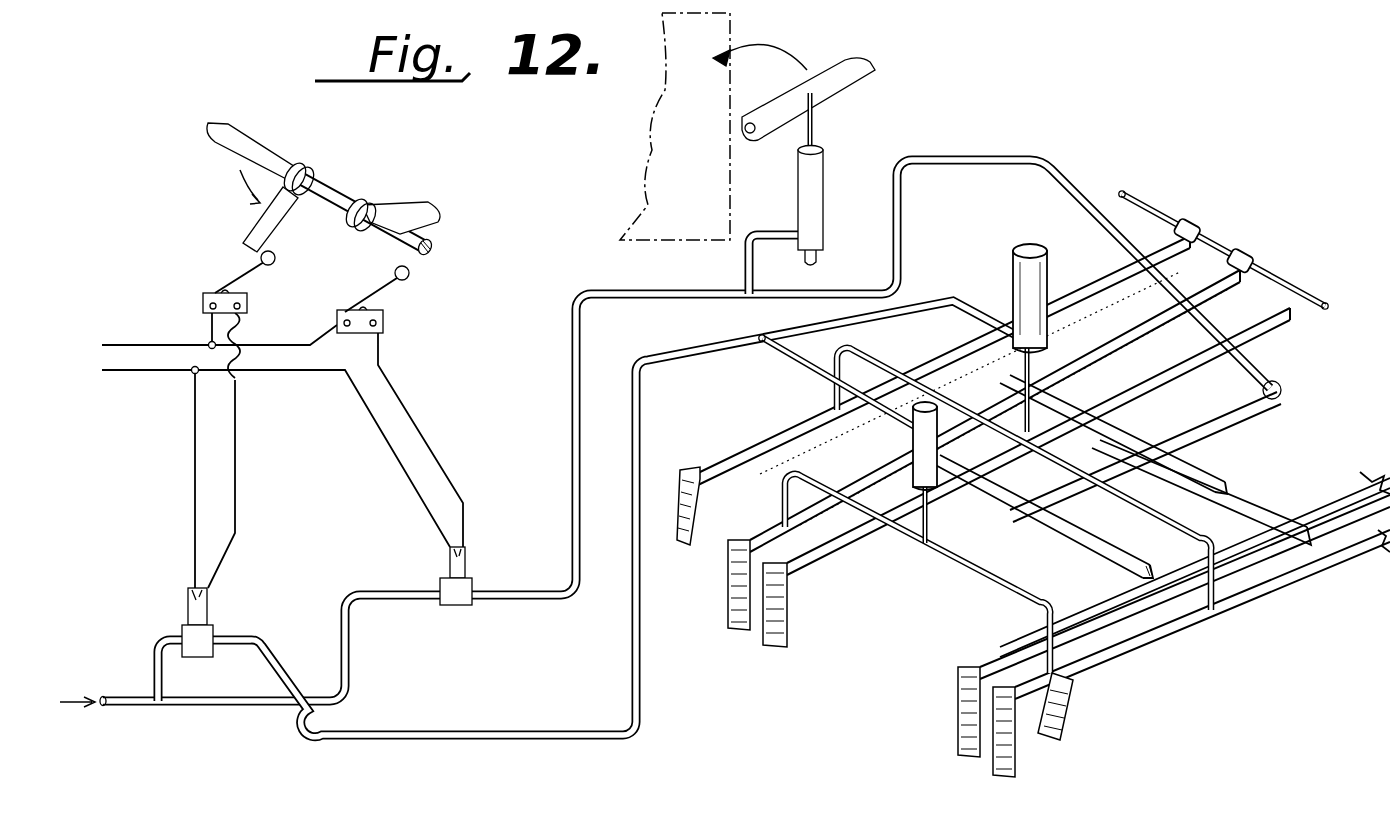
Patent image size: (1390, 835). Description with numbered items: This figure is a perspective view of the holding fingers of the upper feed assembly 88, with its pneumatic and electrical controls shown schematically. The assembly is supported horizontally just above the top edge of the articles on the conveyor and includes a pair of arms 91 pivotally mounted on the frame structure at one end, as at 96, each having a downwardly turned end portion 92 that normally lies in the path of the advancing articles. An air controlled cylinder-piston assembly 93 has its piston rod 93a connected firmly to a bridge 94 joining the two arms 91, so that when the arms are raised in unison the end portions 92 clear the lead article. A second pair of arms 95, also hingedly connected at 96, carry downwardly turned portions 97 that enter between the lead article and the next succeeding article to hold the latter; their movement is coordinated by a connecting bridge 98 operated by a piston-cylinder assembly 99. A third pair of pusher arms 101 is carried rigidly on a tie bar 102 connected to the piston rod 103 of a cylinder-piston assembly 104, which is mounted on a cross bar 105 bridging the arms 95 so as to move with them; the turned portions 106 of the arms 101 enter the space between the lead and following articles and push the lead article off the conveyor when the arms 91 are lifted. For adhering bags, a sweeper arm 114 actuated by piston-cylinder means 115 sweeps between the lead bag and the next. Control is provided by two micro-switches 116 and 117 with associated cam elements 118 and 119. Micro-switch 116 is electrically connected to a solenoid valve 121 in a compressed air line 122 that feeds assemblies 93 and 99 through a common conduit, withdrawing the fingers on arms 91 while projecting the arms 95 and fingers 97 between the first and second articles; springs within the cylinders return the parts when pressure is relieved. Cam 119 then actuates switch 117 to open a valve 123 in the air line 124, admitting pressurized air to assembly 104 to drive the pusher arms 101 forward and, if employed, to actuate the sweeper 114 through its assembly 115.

The feed assembly 88 is at (1125, 171).
The arms 91 is at (762, 440).
The downwardly turned end portion 92 is at (685, 490).
The air controlled cylinder-piston assembly 93 is at (1030, 245).
The piston rod 93a is at (1060, 450).
The bridge 94 is at (1198, 630).
The arms 95 is at (752, 548).
The pivot 96 is at (1250, 265).
The downwardly turned portions 97 is at (725, 620).
The connecting bridge 98 is at (972, 580).
The piston-cylinder assembly 99 is at (935, 498).
The arms 101 is at (850, 548).
The tie bar 102 is at (1075, 548).
The piston rod 103 is at (1125, 472).
The cylinder-piston assembly 104 is at (1234, 424).
The cross bar 105 is at (1240, 503).
The turned portion 106 is at (774, 648).
The sweeper arm 114 is at (848, 78).
The piston-cylinder means 115 is at (795, 190).
The micro-switch 116 is at (204, 292).
The micro-switch 117 is at (336, 324).
The cam element 118 is at (260, 220).
The cam element 119 is at (385, 215).
The solenoid valve 121 is at (184, 618).
The compressed air line 122 is at (384, 740).
The valve 123 is at (445, 553).
The air line 124 is at (572, 462).